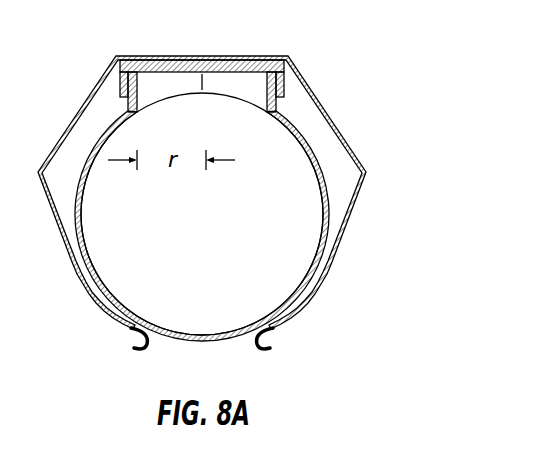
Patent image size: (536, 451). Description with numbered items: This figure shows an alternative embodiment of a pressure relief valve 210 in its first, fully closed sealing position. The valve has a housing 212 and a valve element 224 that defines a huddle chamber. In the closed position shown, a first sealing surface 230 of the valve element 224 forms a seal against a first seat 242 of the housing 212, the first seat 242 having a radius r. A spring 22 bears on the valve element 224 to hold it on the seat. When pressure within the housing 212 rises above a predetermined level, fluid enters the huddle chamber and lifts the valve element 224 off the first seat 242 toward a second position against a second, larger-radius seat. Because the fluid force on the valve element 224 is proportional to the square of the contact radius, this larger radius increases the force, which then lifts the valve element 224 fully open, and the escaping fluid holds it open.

The spring 22 is at (236, 202).
The pressure relief valve 210 is at (373, 114).
The housing 212 is at (202, 242).
The valve element 224 is at (253, 72).
The first sealing surface 230 is at (202, 42).
The first seat 242 is at (202, 113).